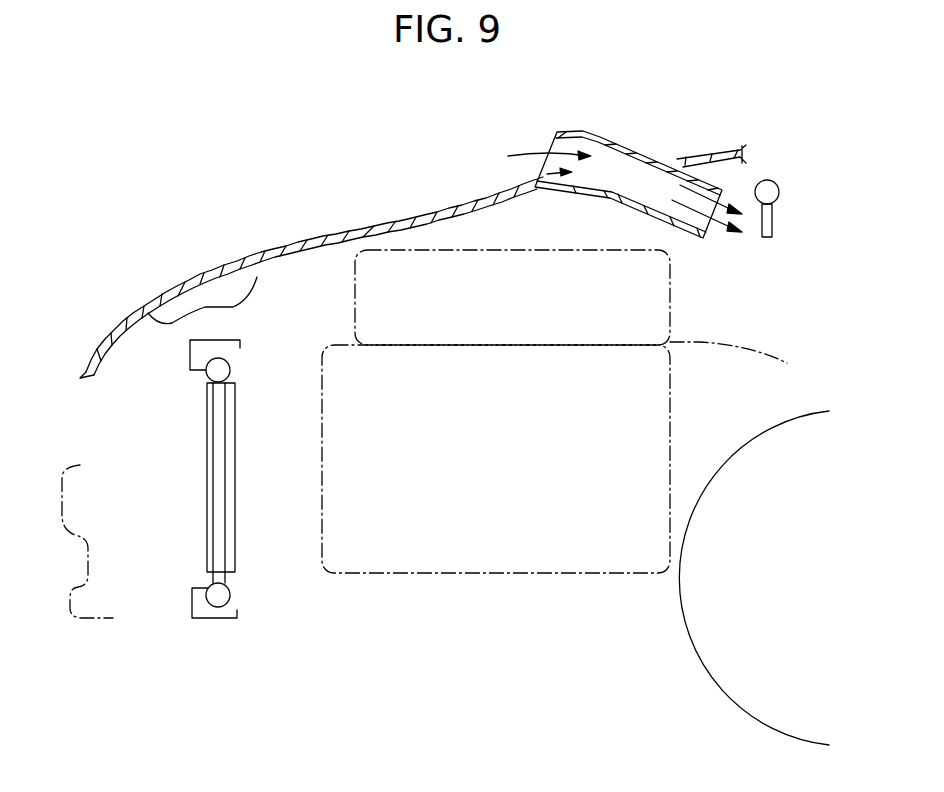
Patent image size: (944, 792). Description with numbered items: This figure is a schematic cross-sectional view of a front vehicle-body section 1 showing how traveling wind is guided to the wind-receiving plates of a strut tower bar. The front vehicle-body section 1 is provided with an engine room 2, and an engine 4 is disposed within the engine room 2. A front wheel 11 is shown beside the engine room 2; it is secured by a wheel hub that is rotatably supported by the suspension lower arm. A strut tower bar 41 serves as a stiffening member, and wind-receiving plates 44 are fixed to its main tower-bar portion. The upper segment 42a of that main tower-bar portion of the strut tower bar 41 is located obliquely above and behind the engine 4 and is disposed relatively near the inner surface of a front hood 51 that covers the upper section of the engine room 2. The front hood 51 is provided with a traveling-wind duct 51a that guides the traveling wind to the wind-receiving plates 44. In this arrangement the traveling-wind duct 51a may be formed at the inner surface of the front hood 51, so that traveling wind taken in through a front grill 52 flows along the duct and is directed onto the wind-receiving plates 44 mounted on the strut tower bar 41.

The front vehicle-body section 1 is at (93, 280).
The engine room 2 is at (719, 305).
The engine 4 is at (670, 418).
The front wheel 11 is at (727, 700).
The strut tower bar 41 is at (798, 184).
The upper segment 42a is at (767, 180).
The wind-receiving plate 44 is at (772, 222).
The front hood 51 is at (318, 240).
The traveling-wind duct 51a is at (627, 160).
The front grill 52 is at (118, 395).